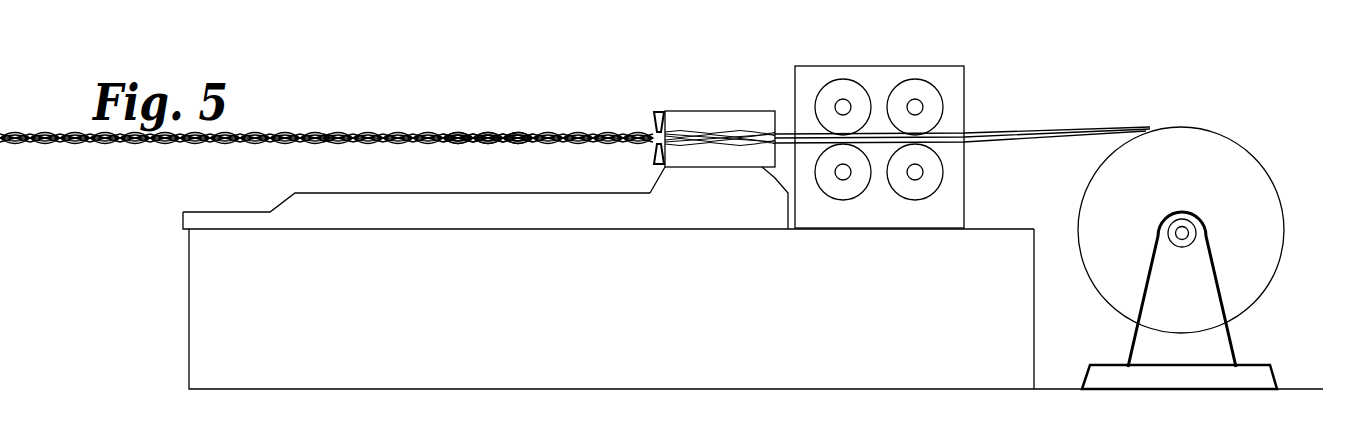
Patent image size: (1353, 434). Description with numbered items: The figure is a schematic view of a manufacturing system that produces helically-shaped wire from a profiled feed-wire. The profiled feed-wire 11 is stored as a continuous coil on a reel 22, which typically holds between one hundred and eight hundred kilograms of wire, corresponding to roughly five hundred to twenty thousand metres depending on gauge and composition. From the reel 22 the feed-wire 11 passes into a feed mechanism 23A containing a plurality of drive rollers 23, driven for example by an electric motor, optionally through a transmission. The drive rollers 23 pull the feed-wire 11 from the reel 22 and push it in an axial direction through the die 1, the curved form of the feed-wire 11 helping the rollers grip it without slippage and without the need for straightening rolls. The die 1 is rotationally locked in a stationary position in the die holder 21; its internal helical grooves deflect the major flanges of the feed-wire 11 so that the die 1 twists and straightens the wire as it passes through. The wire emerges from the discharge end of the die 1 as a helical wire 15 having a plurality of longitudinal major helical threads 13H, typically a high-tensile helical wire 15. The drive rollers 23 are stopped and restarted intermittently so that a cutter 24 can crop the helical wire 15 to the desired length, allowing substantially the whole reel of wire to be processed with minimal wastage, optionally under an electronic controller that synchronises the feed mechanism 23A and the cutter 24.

The die 1 is at (722, 103).
The profiled feed-wire 11 is at (1043, 127).
The major helical threads 13H is at (493, 130).
The helical wire 15 is at (446, 129).
The die holder 21 is at (687, 176).
The reel 22 is at (1230, 205).
The drive rollers 23 is at (937, 110).
The feed mechanism 23A is at (939, 124).
The cutter 24 is at (653, 110).